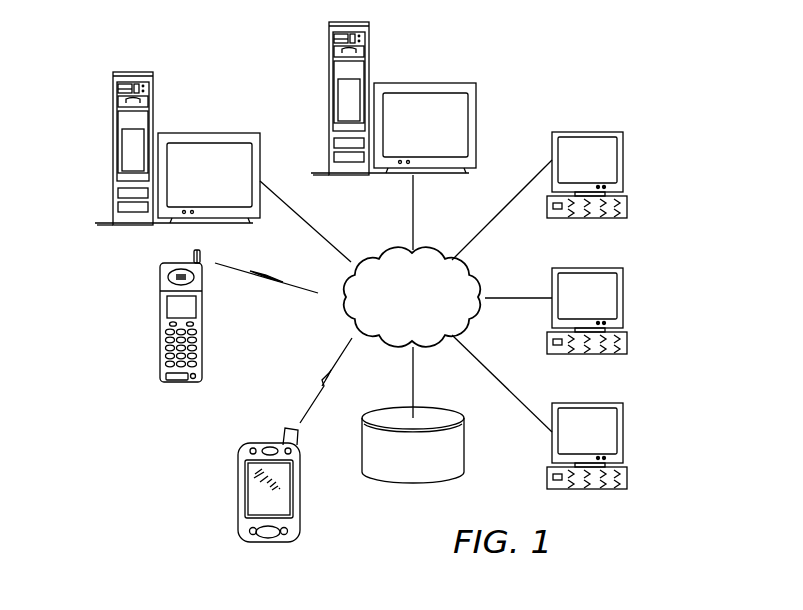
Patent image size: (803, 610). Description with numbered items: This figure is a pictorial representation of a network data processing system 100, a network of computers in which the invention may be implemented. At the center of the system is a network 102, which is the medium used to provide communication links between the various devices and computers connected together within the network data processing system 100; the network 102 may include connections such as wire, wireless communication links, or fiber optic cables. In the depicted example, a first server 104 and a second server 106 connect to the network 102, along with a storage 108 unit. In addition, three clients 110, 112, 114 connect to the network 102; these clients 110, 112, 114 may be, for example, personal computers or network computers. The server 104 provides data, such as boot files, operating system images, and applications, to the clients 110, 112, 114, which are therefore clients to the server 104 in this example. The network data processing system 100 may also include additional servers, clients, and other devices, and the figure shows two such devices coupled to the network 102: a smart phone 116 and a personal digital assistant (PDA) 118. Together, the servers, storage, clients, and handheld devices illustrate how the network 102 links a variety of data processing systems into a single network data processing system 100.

The network data processing system 100 is at (531, 93).
The network 102 is at (385, 250).
The server 104 is at (113, 148).
The server 106 is at (328, 68).
The storage 108 is at (405, 490).
The client 110 is at (623, 160).
The client 112 is at (623, 296).
The client 114 is at (622, 433).
The smart phone 116 is at (160, 350).
The personal digital assistant (PDA) 118 is at (238, 490).